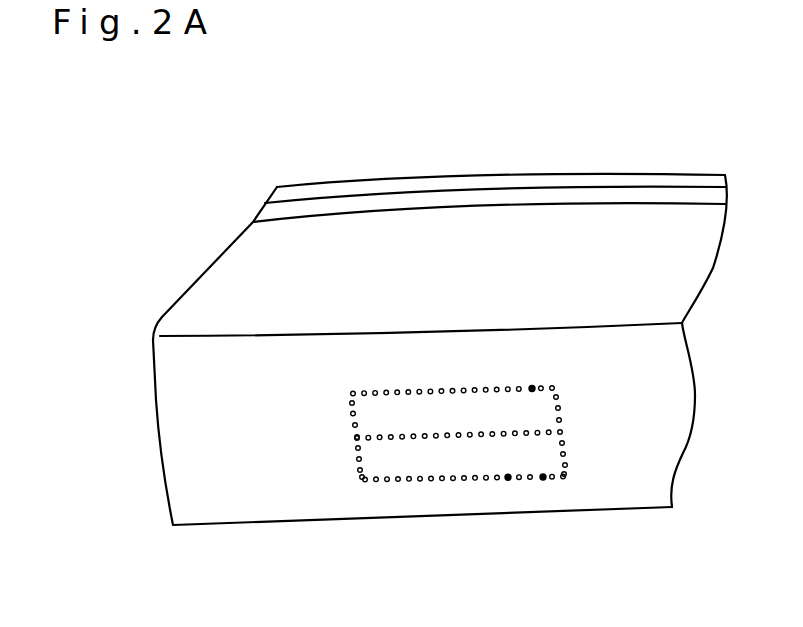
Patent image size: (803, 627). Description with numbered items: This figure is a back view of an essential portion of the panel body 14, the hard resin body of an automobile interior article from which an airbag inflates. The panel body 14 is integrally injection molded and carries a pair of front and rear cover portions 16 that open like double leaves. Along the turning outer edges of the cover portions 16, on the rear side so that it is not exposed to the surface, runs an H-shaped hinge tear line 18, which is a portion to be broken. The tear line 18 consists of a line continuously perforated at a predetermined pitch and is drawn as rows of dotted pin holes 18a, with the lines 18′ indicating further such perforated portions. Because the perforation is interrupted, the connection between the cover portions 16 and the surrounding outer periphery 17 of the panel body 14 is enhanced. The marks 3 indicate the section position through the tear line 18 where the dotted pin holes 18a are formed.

The panel body 14 is at (593, 172).
The section line 3— 3 is at (317, 438).
The outer periphery 17 is at (397, 375).
The cover portion 16 is at (457, 410).
The hinge tear line 18 is at (423, 435).
The perforation hole 18′ is at (532, 388).
The pin hole 18a is at (353, 413).